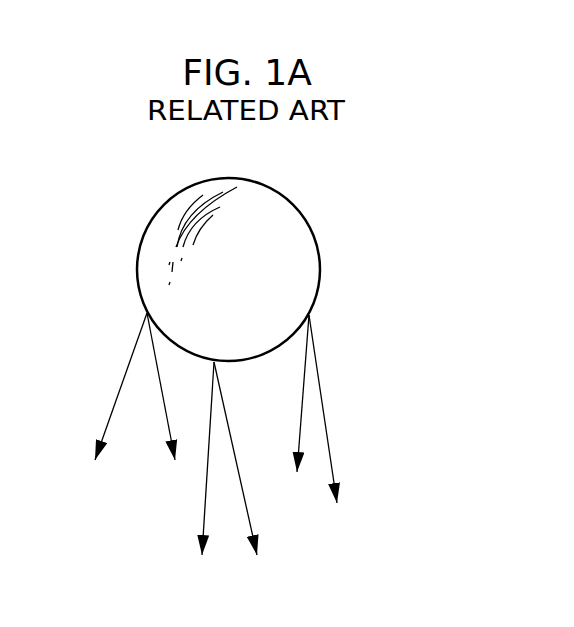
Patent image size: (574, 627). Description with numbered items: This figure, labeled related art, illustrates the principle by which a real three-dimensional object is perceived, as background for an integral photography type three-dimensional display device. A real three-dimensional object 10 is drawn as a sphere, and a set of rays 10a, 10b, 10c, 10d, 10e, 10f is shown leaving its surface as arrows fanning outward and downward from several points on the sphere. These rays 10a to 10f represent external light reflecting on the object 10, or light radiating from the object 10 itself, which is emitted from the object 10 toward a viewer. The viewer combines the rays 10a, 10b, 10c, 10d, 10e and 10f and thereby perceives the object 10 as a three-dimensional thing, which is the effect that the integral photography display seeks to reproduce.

The object 10 is at (302, 212).
The ray 10a is at (109, 403).
The ray 10b is at (171, 403).
The ray 10c is at (198, 473).
The ray 10d is at (246, 473).
The ray 10e is at (297, 409).
The ray 10f is at (333, 422).